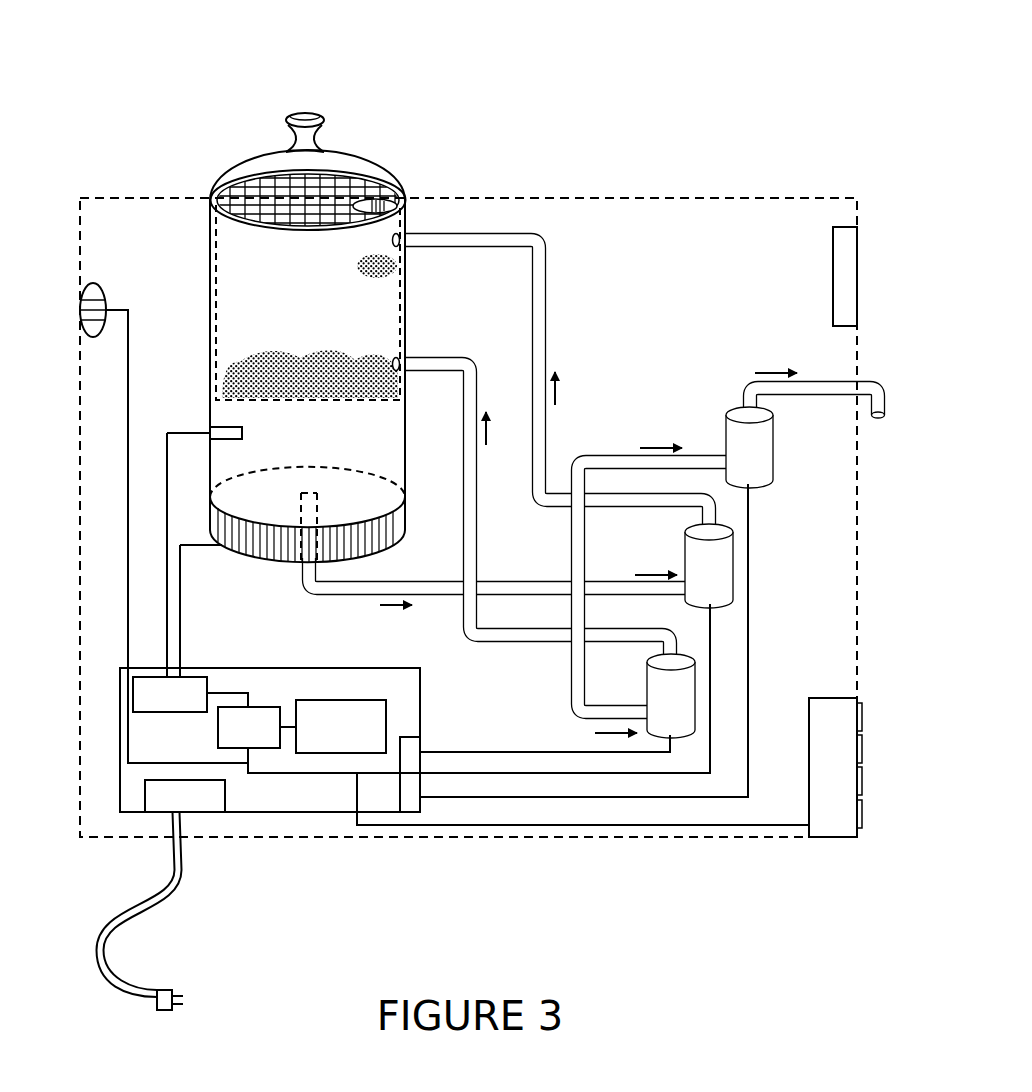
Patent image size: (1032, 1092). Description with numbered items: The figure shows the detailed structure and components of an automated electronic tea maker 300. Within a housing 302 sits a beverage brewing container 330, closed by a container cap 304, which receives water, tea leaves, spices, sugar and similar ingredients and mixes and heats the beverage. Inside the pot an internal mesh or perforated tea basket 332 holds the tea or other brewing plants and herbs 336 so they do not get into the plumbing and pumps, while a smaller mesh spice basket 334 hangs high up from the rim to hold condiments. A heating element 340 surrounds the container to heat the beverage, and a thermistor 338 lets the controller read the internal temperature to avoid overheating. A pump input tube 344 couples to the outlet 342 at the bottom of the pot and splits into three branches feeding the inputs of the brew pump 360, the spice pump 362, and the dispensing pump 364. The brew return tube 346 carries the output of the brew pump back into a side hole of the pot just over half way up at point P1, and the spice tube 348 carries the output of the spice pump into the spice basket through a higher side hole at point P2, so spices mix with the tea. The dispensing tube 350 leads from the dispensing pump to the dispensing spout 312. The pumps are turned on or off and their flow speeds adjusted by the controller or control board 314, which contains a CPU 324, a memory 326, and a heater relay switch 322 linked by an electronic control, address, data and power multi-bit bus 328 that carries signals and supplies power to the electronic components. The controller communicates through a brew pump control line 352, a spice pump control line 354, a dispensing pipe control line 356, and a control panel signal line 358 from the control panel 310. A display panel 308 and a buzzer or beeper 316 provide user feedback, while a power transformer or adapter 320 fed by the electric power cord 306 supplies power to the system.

The electronic tea maker 300 is at (120, 95).
The housing 302 is at (715, 196).
The container cap 304 is at (264, 165).
The electric power cord 306 is at (97, 958).
The display panel 308 is at (833, 279).
The control panel 310 is at (848, 698).
The dispensing spout 312 is at (882, 380).
The controller or control board 314 is at (420, 698).
The buzzer or beeper 316 is at (85, 292).
The power transformer or adapter 320 is at (120, 810).
The heater relay switch 322 is at (133, 700).
The CPU 324 is at (218, 727).
The memory 326 is at (386, 728).
The electronic control/address/data/power multi-bit bus 328 is at (128, 765).
The beverage brewing container 330 is at (210, 247).
The internal mesh or perforated tea basket 332 is at (214, 302).
The small mesh or perforated spice basket/container 334 is at (350, 248).
The tea or other brewing plants and herbs 336 is at (302, 352).
The thermistor 338 is at (212, 425).
The heating element 340 is at (255, 565).
The outlet 342 is at (305, 490).
The pump input tube 344 is at (328, 600).
The brew return tube 346 is at (462, 522).
The spice tube 348 is at (550, 348).
The dispensing tube 350 is at (818, 382).
The brew pump control line 352 is at (478, 752).
The spice pump control line 354 is at (560, 773).
The dispensing pipe control line 356 is at (637, 797).
The control panel signal line 358 is at (700, 825).
The brew pump 360 is at (695, 685).
The spice pump 362 is at (735, 556).
The dispensing pump 364 is at (726, 432).
The brew pump outlet hole point P1 is at (417, 353).
The spice tube inlet point P2 is at (415, 230).